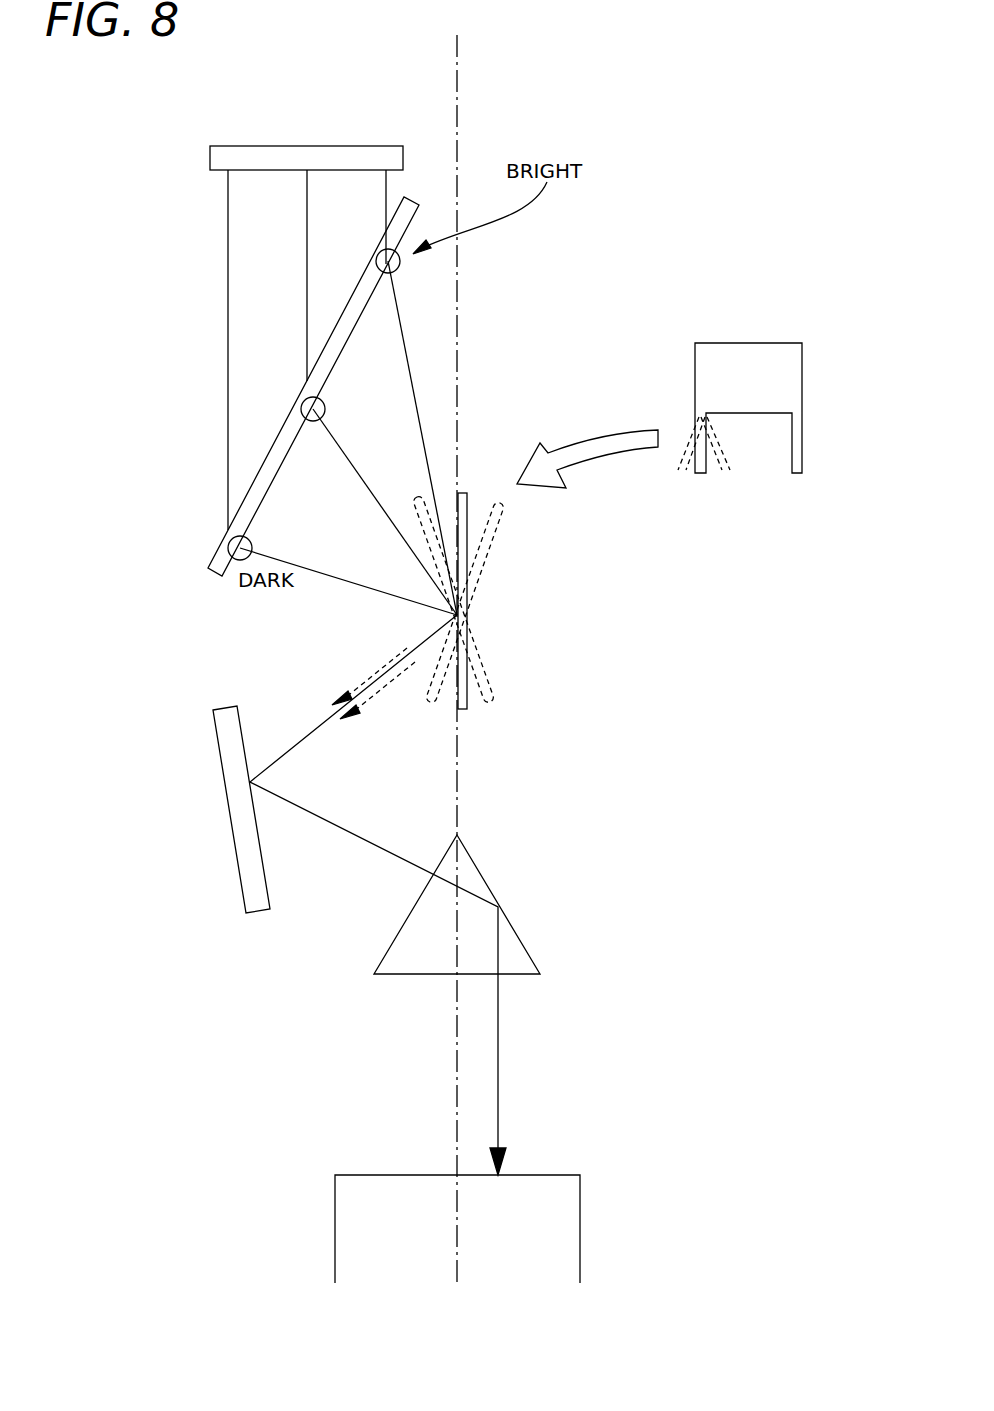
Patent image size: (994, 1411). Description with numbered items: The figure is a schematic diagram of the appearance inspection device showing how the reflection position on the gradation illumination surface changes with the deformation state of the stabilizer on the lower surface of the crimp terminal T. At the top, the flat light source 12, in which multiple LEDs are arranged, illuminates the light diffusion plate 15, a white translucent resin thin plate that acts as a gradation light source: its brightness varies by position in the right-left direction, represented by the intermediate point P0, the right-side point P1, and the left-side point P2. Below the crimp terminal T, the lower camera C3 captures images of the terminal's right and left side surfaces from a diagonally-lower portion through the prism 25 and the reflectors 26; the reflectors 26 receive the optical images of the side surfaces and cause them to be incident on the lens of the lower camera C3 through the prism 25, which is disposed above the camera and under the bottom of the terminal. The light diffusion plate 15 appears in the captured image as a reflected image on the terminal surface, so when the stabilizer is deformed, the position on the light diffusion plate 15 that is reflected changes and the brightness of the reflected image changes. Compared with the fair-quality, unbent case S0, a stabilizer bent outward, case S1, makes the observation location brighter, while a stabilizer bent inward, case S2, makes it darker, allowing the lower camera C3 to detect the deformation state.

The flat light source 12 is at (283, 152).
The light diffusion plate 15 is at (250, 490).
The prism 25 is at (527, 947).
The reflectors 26 is at (247, 880).
The lower camera C3 is at (555, 1175).
The crimp terminal T is at (726, 330).
The intermediate point P0 is at (325, 404).
The right-side point P1 is at (400, 266).
The left-side point P2 is at (253, 542).
The stabilizer in fair-quality state S0 is at (462, 710).
The stabilizer bent outward S1 is at (427, 703).
The stabilizer bent inward S2 is at (487, 700).